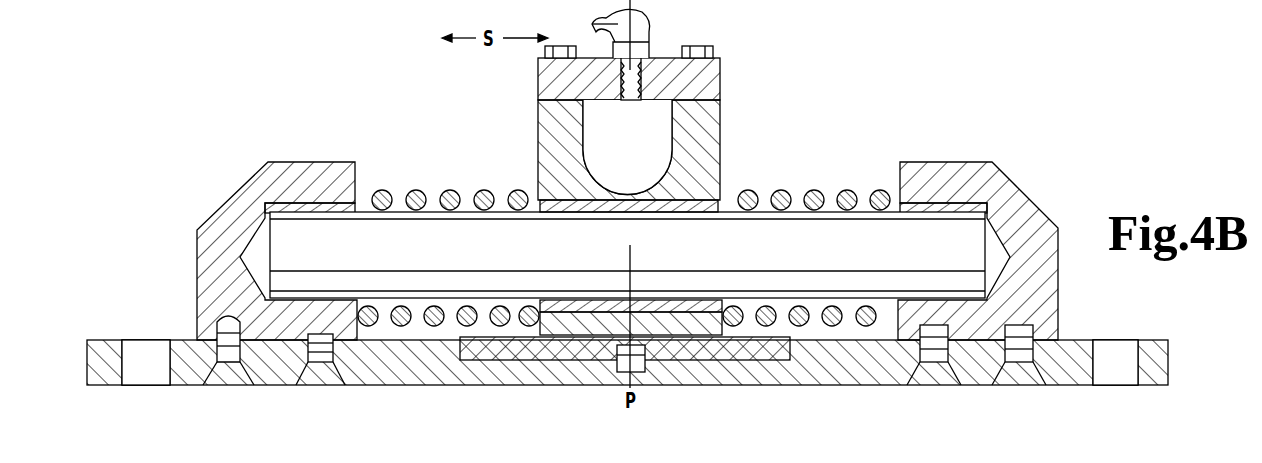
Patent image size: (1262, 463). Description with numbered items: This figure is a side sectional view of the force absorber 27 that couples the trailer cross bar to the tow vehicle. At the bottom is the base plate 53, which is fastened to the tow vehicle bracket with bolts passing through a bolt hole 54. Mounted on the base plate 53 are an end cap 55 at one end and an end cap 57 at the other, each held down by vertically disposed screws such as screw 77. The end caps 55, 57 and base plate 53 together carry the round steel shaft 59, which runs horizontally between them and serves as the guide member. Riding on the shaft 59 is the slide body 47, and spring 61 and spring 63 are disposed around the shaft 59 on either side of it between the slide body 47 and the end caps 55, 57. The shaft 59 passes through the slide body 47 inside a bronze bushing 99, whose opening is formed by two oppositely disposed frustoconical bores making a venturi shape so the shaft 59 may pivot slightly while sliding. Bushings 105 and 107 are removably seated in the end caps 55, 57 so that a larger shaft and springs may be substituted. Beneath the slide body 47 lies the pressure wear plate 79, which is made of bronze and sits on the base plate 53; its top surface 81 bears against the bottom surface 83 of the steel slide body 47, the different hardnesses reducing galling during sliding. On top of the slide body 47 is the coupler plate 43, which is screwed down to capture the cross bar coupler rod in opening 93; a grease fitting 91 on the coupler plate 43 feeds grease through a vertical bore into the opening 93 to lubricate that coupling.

The force absorber 27 is at (868, 110).
The coupler plate 43 is at (702, 52).
The slide body 47 is at (728, 152).
The base plate 53 is at (428, 373).
The bolt hole 54 is at (1120, 335).
The end cap 55 is at (278, 178).
The end cap 57 is at (1002, 172).
The shaft 59 is at (703, 262).
The spring 61 is at (868, 327).
The spring 63 is at (485, 186).
The screw 77 is at (1040, 383).
The pressure wear plate 79 is at (474, 350).
The top surface 81 is at (586, 345).
The bottom surface 83 is at (690, 352).
The grease fitting 91 is at (645, 24).
The opening 93 is at (672, 134).
The bushing 99 is at (690, 204).
The bushing 105 is at (350, 198).
The bushing 107 is at (902, 198).